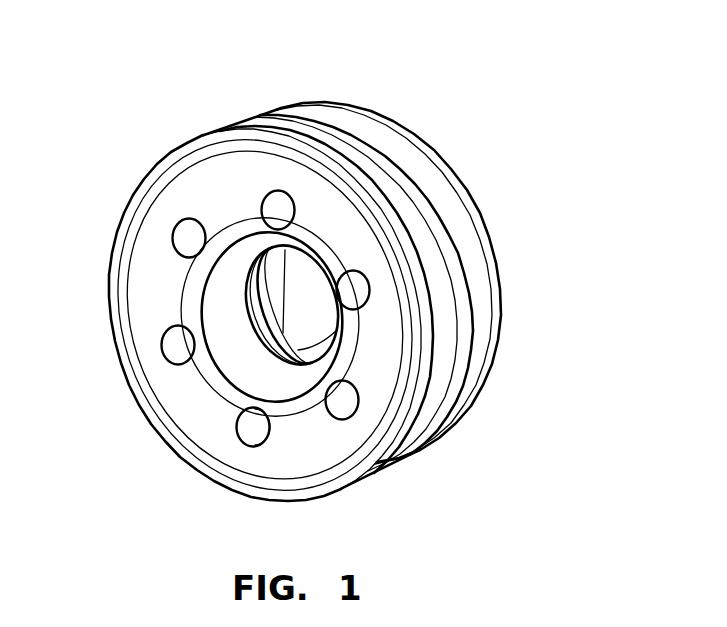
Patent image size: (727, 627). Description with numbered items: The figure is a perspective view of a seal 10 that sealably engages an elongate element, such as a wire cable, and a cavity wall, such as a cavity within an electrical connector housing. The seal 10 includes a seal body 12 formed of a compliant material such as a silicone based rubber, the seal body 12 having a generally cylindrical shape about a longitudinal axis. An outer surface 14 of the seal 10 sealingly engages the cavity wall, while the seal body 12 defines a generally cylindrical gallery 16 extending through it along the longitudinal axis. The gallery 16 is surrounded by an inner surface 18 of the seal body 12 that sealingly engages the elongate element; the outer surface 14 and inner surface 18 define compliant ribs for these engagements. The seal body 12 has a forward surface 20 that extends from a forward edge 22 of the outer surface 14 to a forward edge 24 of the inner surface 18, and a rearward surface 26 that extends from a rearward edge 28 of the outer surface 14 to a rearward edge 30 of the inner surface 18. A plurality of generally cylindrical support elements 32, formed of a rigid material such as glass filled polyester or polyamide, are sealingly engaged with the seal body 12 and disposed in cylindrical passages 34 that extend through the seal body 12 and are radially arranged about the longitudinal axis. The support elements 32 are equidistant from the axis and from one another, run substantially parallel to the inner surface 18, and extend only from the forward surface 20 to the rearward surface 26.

The seal 10 is at (425, 78).
The seal body 12 is at (210, 177).
The outer surface 14 is at (450, 168).
The gallery 16 is at (312, 278).
The inner surface 18 is at (255, 382).
The forward surface 20 is at (153, 317).
The forward edge of the outer surface 22 is at (127, 213).
The forward edge of the inner surface 24 is at (342, 328).
The rearward surface 26 is at (500, 241).
The rearward edge of the outer surface 28 is at (494, 303).
The rearward edge of the inner surface 30 is at (312, 335).
The support elements 32 is at (243, 427).
The cylindrical passages 34 is at (258, 447).